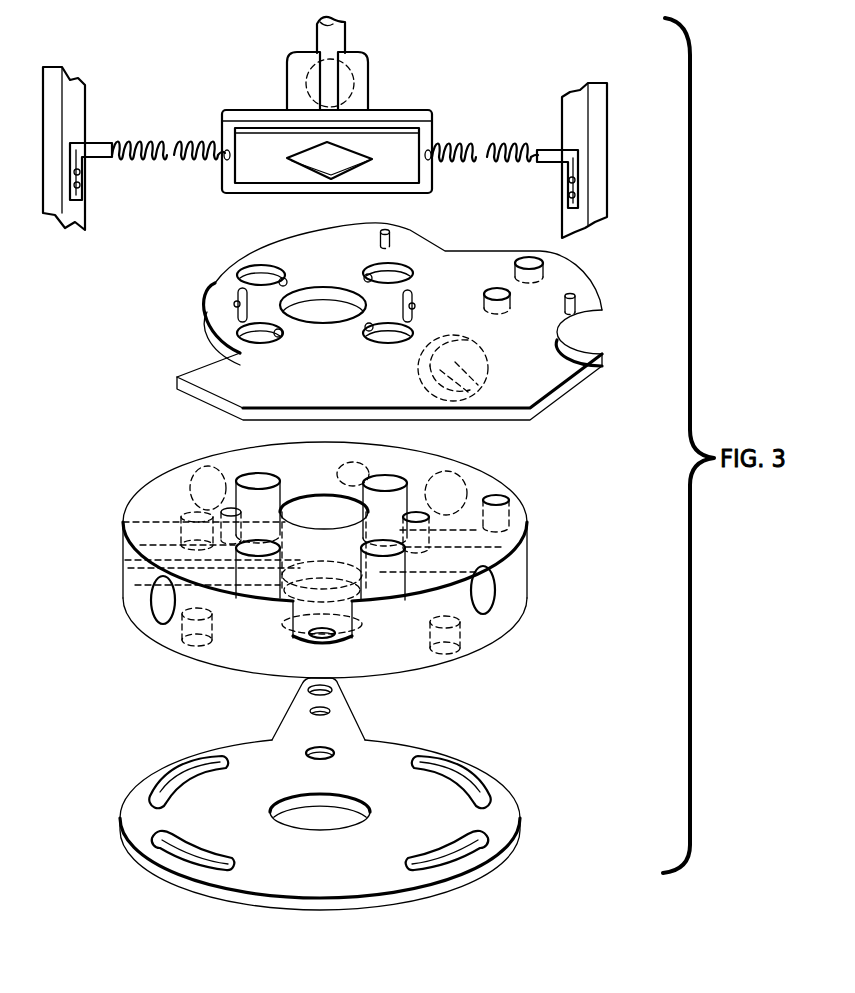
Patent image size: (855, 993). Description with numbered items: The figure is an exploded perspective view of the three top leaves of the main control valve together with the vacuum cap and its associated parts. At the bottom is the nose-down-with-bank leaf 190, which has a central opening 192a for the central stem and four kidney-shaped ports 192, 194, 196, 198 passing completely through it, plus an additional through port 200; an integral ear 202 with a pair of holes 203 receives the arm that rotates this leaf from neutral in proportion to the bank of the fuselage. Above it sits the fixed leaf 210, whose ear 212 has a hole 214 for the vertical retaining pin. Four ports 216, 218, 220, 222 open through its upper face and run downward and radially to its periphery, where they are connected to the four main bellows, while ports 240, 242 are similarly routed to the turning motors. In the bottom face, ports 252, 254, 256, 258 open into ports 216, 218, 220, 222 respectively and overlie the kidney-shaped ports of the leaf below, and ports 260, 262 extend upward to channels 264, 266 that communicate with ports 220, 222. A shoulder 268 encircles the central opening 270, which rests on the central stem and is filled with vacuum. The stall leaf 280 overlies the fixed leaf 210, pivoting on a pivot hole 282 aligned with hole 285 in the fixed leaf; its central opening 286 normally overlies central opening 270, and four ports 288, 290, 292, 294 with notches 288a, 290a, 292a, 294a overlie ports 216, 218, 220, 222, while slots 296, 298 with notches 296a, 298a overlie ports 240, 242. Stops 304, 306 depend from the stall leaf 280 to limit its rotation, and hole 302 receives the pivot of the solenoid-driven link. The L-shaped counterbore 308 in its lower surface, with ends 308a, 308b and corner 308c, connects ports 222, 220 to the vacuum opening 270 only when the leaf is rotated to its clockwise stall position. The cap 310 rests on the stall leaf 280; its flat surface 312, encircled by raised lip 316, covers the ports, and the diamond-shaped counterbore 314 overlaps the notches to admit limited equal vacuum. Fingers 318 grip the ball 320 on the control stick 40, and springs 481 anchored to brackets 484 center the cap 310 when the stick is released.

The control stick 40 is at (338, 38).
The cap 310 is at (242, 111).
The flat surface 312 is at (405, 145).
The diamond-shaped counterbore 314 is at (311, 160).
The raised lip 316 is at (224, 172).
The fingers 318 is at (300, 64).
The ball 320 is at (333, 89).
The springs 481 is at (148, 147).
The brackets 484 is at (77, 127).
The stall leaf 280 is at (229, 270).
The pivot hole 282 is at (508, 297).
The central opening 286 is at (323, 312).
The port 288 is at (256, 343).
The notch 288a is at (278, 340).
The port 290 is at (386, 344).
The notch 290a is at (366, 330).
The port 292 is at (258, 266).
The notch 292a is at (285, 279).
The port 294 is at (413, 272).
The notch 294a is at (365, 278).
The slot 296 is at (235, 310).
The notch 296a is at (236, 302).
The slot 298 is at (412, 318).
The notch 298a is at (415, 305).
The hole 302 is at (527, 262).
The stop 304 is at (383, 232).
The stop 306 is at (577, 297).
The L-shaped counterbore 308 is at (472, 386).
The end of counterbore 308a is at (470, 340).
The end of counterbore 308b is at (414, 385).
The corner of counterbore 308c is at (472, 367).
The fixed leaf 210 is at (200, 660).
The ear 212 is at (305, 660).
The hole 214 is at (348, 642).
The port 216 is at (165, 616).
The port 218 is at (385, 557).
The port 220 is at (214, 484).
The port 222 is at (432, 480).
The port 240 is at (186, 510).
The port 242 is at (421, 516).
The port 252 is at (211, 642).
The port 254 is at (470, 653).
The port 256 is at (200, 570).
The port 258 is at (515, 586).
The port 260 is at (334, 524).
The port 262 is at (345, 480).
The channel 264 is at (282, 475).
The channel 266 is at (366, 478).
The shoulder 268 is at (312, 566).
The central opening 270 is at (310, 650).
The hole 285 is at (502, 501).
The nose-down-with-bank leaf 190 is at (137, 830).
The kidney-shaped port 192 is at (222, 856).
The central opening 192a is at (357, 807).
The kidney-shaped port 194 is at (430, 857).
The kidney-shaped port 196 is at (222, 767).
The kidney-shaped port 198 is at (428, 776).
The through port 200 is at (326, 754).
The ear 202 is at (345, 727).
The holes 203 is at (331, 712).